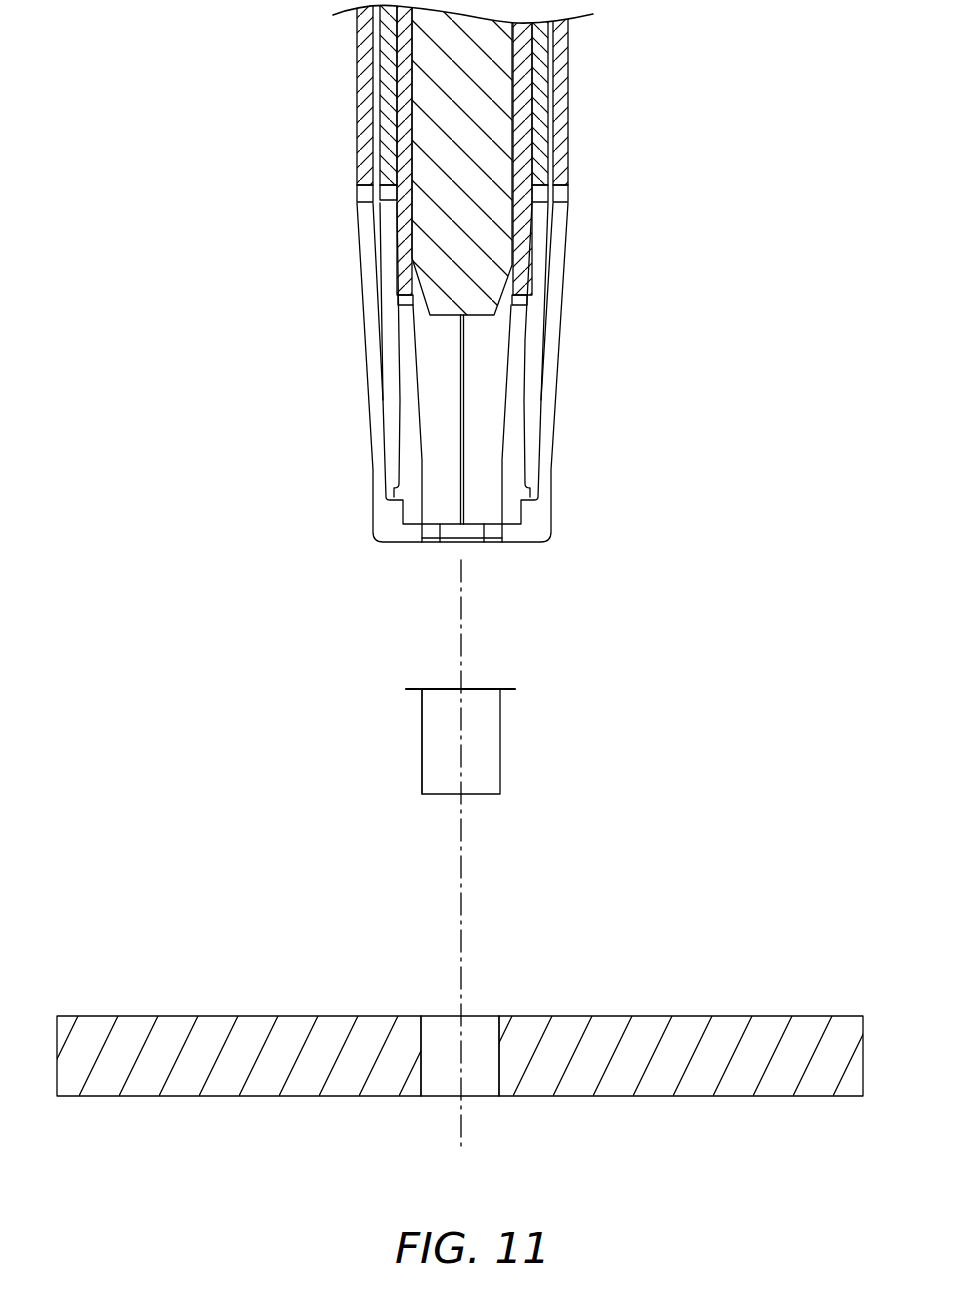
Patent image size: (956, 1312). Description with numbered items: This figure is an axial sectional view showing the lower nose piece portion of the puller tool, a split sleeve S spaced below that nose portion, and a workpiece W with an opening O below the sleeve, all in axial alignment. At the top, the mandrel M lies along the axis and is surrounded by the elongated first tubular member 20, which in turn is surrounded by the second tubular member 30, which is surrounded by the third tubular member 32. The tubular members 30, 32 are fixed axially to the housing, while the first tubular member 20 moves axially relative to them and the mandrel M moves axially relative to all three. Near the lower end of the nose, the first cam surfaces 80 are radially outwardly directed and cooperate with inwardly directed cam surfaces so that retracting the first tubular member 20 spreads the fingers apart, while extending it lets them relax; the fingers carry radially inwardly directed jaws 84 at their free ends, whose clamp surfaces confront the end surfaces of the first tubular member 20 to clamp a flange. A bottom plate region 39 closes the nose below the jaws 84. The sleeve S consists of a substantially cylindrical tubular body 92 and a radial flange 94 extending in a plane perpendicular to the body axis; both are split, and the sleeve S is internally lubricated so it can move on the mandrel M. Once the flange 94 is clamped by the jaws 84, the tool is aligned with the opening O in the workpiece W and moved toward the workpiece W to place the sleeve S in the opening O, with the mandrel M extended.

The mandrel M is at (487, 78).
The first tubular member 20 is at (523, 98).
The second tubular member 30 is at (543, 135).
The third tubular member 32 is at (563, 165).
The first cam surfaces 80 is at (405, 484).
The jaws 84 is at (398, 534).
The bottom plate 39 is at (528, 535).
The radial flange 94 is at (418, 688).
The sleeve S is at (422, 742).
The tubular body 92 is at (488, 758).
The workpiece W is at (305, 1016).
The opening O is at (475, 1036).